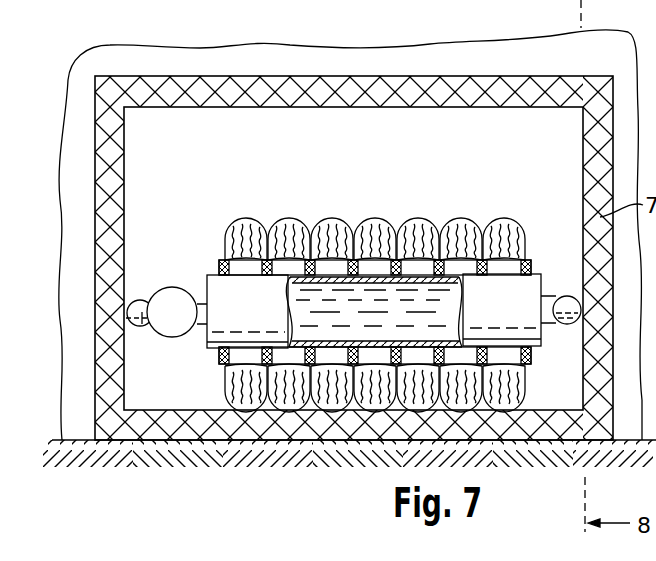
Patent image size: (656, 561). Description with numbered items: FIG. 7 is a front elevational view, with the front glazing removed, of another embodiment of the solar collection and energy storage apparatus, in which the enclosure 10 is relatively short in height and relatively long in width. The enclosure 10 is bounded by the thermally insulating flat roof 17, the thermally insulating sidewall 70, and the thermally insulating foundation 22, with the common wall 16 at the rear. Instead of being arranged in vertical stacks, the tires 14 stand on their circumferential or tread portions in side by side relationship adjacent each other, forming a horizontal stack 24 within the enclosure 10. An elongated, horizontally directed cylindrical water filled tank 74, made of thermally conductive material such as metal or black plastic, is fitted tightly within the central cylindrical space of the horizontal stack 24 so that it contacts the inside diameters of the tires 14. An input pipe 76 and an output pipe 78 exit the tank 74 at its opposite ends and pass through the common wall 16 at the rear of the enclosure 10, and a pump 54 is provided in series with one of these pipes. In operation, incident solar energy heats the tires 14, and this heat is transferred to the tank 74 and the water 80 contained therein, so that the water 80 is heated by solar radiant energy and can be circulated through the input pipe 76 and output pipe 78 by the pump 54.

The enclosure 10 is at (199, 69).
The common wall 16 is at (247, 60).
The thermally insulating flat roof 17 is at (478, 88).
The thermally insulating sidewall 70 is at (100, 283).
The thermally insulating foundation 22 is at (308, 432).
The tires 14 is at (375, 283).
The horizontal stack 24 is at (460, 218).
The water 80 is at (334, 305).
The cylindrical water filled tank 74 is at (217, 290).
The pump 54 is at (168, 293).
The input pipe 76 is at (136, 330).
The output pipe 78 is at (562, 297).